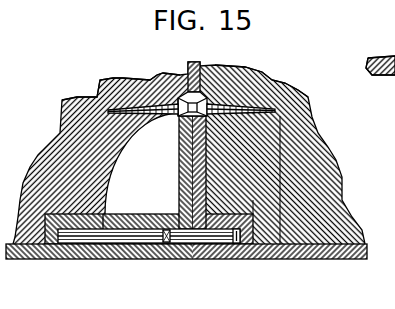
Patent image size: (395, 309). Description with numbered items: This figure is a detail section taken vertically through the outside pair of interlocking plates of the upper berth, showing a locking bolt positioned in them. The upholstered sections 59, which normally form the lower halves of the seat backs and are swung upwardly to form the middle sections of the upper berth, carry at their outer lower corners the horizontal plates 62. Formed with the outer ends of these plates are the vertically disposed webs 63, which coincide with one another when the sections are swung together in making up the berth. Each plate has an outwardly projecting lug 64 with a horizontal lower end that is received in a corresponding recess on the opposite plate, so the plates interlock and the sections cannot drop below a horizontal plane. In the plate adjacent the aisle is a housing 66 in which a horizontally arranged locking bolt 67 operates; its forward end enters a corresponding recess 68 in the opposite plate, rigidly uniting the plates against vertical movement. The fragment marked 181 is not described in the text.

The upholstered sections 59 is at (122, 88).
The horizontal plates 62 is at (29, 260).
The vertically disposed webs 63 is at (187, 92).
The outwardly projecting lug 64 is at (127, 156).
The housing 66 is at (148, 208).
The locking bolt 67 is at (140, 245).
The recess 68 is at (233, 246).
The adjacent figure fragment 181 is at (380, 87).